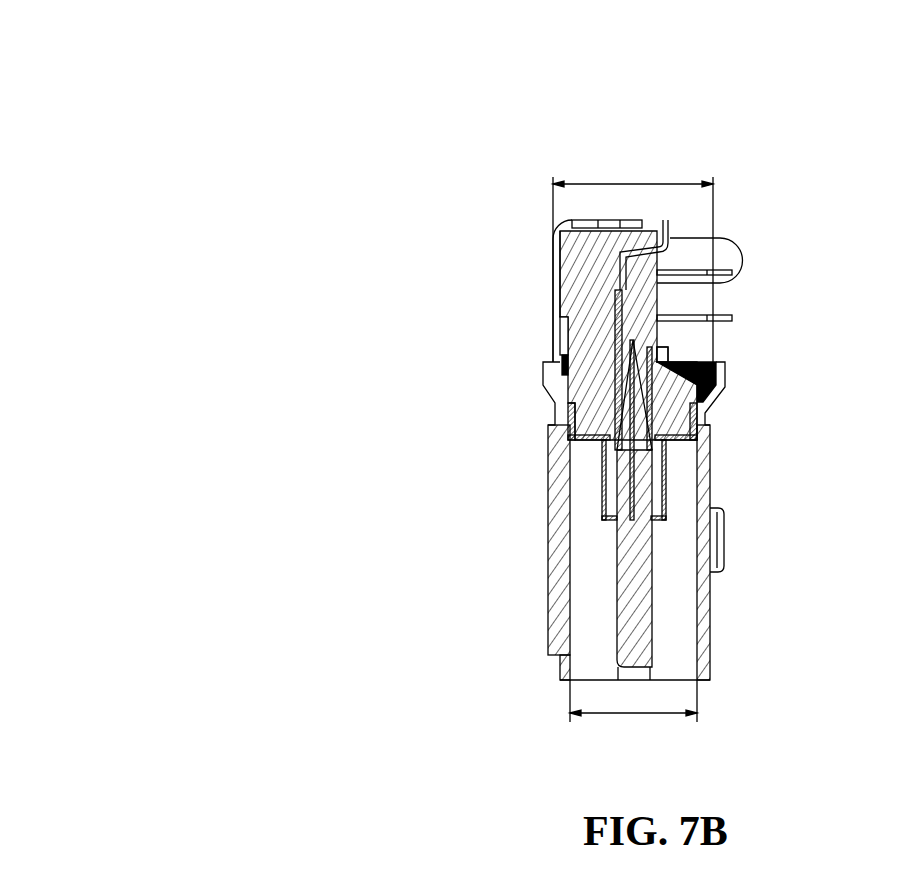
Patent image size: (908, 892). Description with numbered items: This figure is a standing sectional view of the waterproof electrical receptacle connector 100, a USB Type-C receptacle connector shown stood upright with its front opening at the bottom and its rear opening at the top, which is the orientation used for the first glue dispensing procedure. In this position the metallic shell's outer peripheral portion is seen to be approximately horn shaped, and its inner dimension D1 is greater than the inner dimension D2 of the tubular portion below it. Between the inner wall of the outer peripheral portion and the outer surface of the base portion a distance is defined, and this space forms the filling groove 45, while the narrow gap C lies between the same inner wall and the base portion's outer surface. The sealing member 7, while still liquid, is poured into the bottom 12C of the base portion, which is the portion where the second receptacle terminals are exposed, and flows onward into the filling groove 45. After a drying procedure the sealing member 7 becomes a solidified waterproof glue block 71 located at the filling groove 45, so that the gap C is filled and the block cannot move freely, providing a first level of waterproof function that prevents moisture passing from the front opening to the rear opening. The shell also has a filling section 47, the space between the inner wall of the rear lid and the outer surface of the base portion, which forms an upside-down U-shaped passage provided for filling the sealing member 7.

The waterproof electrical receptacle connector 100 is at (63, 53).
The inner dimension of the outer peripheral portion D1 is at (633, 262).
The inner dimension of the tubular portion D2 is at (633, 701).
The bottom of the base portion 12C is at (657, 303).
The sealing member 7 is at (688, 356).
The filling groove 45 is at (703, 363).
The waterproof glue block 71 is at (717, 388).
The gap C is at (705, 417).
The filling section 47 is at (563, 336).